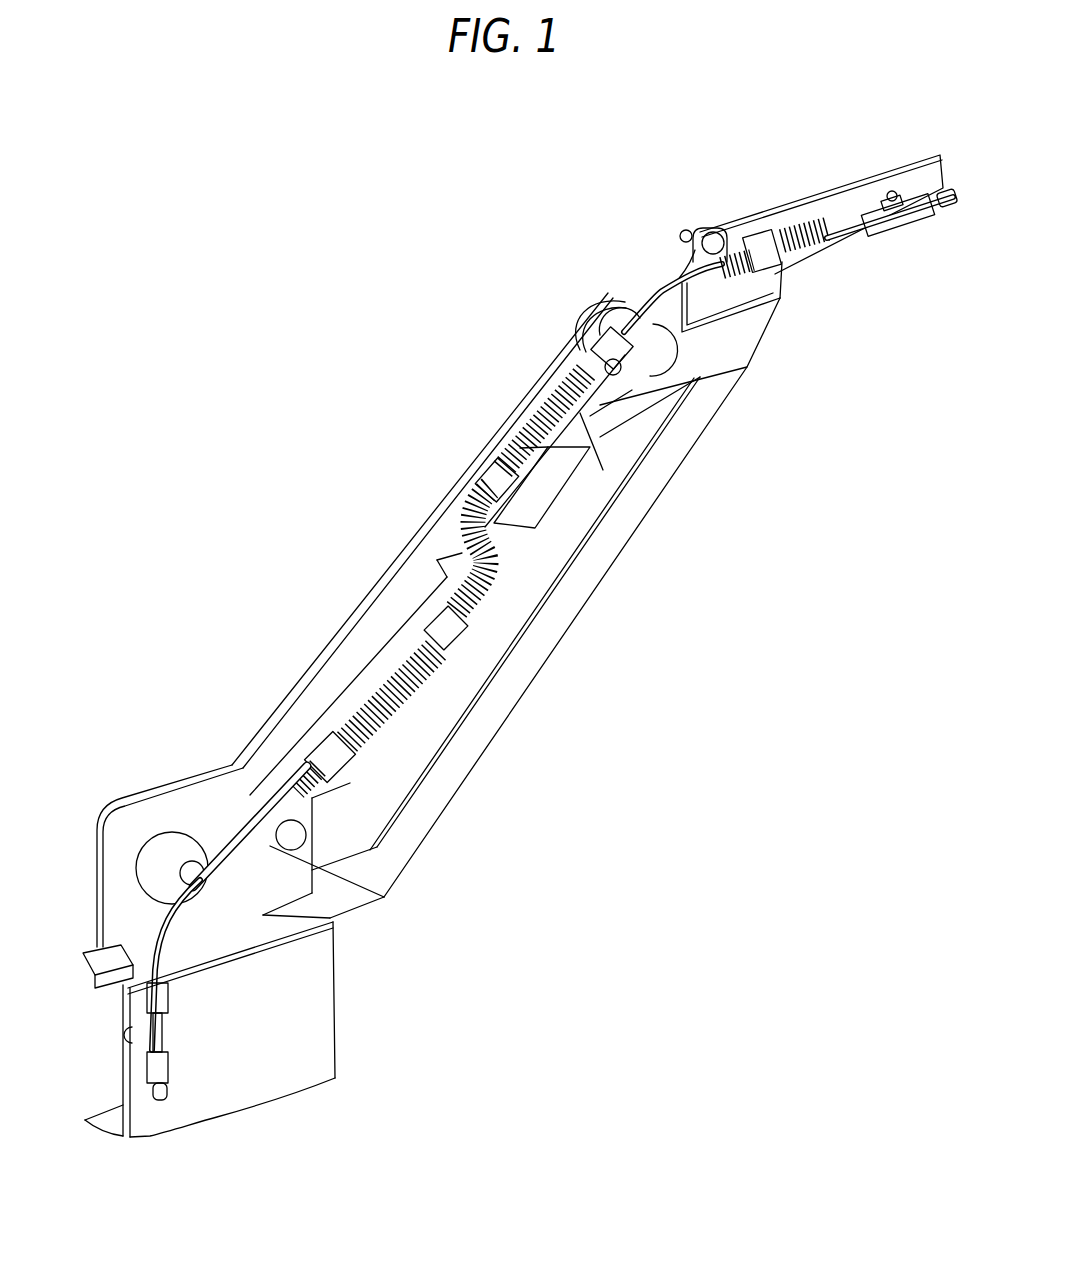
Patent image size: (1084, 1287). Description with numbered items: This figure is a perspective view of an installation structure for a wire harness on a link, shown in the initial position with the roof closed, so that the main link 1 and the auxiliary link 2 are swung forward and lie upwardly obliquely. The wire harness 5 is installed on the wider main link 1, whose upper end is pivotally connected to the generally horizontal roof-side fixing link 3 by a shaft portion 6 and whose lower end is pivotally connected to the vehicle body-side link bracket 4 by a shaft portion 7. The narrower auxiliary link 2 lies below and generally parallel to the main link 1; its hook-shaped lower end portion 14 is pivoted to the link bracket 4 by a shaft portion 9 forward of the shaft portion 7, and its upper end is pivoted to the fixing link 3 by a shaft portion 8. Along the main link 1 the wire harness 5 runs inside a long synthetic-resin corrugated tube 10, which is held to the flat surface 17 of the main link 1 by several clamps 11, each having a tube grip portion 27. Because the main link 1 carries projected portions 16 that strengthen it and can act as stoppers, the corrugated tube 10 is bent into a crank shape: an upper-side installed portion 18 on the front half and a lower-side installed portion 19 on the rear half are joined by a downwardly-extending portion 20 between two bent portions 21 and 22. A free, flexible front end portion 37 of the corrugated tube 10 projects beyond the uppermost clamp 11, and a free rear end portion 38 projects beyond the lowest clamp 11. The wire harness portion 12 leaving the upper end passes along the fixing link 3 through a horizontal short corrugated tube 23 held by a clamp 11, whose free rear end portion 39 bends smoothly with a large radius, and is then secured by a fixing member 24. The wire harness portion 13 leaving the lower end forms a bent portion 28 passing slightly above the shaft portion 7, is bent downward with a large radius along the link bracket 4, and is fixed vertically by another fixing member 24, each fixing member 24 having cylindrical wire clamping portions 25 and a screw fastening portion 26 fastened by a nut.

The main link 1 is at (440, 488).
The auxiliary link 2 is at (634, 552).
The fixing link 3 is at (732, 213).
The link bracket 4 is at (157, 783).
The wire harness 5 is at (672, 258).
The shaft portion 6 is at (695, 396).
The shaft portion 7 is at (330, 862).
The shaft portion 8 is at (713, 234).
The shaft portion 9 is at (306, 830).
The corrugated tube 10 is at (445, 680).
The clamp 11 is at (763, 218).
The wire harness portion 12 is at (748, 368).
The wire harness portion 13 is at (187, 855).
The lower end portion 14 is at (335, 860).
The projected portion 16 is at (387, 600).
The flat surface 17 is at (443, 502).
The upper-side installed portion 18 is at (560, 385).
The lower-side installed portion 19 is at (415, 710).
The downwardly-extending portion 20 is at (453, 520).
The bent portion 21 is at (492, 470).
The bent portion 22 is at (507, 563).
The short corrugated tube 23 is at (805, 210).
The fixing member 24 is at (875, 232).
The wire clamping portion 25 is at (158, 1067).
The screw fastening portion 26 is at (138, 1022).
The tube grip portion 27 is at (780, 306).
The bent portion 28 is at (112, 810).
The front end portion 37 is at (620, 300).
The rear end portion 38 is at (308, 765).
The rear end portion 39 is at (748, 312).